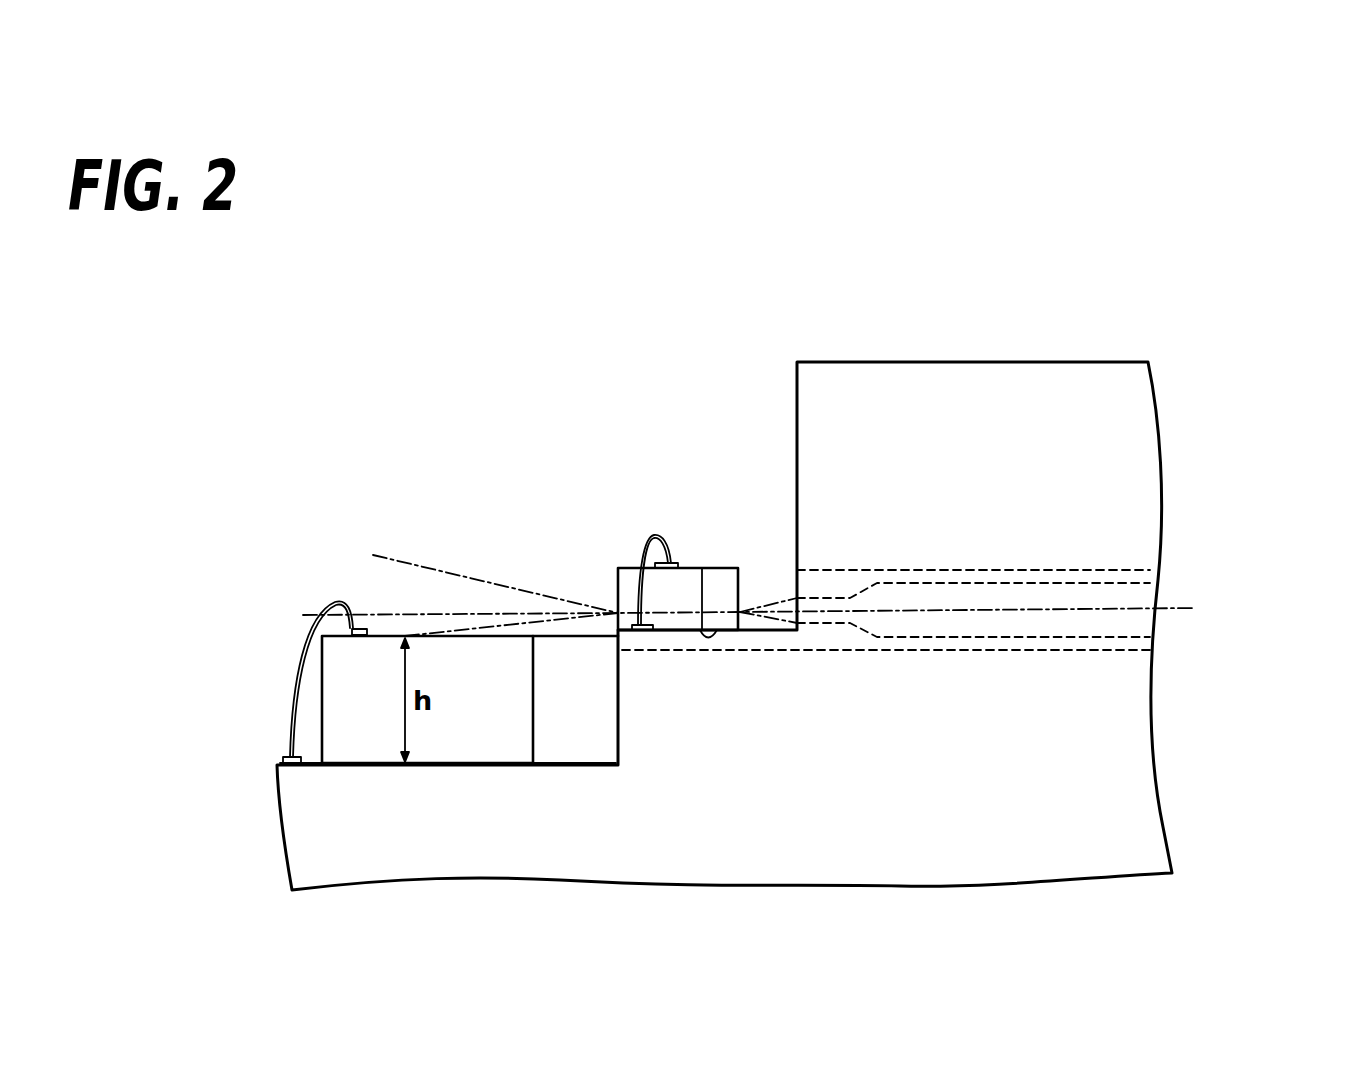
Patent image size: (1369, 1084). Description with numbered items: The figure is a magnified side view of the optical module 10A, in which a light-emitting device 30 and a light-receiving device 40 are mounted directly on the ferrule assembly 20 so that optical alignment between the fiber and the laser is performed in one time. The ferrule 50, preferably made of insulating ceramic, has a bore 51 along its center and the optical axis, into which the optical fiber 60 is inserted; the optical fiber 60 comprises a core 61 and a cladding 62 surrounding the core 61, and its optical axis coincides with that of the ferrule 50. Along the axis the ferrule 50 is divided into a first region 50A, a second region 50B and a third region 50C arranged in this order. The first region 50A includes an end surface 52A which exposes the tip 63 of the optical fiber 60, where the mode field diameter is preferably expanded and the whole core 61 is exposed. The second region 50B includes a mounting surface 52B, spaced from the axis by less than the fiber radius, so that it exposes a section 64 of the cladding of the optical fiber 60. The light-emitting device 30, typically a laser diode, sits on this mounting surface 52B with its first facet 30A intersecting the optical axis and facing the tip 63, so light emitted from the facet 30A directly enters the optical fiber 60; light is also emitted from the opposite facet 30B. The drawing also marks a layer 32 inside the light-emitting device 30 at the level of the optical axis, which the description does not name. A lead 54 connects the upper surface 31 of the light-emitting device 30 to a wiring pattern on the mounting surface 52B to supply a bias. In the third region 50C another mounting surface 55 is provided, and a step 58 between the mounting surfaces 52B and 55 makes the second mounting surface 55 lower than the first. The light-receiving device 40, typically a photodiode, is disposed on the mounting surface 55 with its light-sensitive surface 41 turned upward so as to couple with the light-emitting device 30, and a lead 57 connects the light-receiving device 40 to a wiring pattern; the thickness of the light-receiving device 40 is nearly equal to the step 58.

The optical module 10A is at (1100, 293).
The ferrule assembly 20 is at (1300, 358).
The light-emitting device 30 is at (728, 567).
The first facet 30A is at (742, 575).
The facet 30B is at (617, 590).
The upper surface 31 is at (690, 566).
The active layer 32 is at (702, 567).
The light-receiving device 40 is at (318, 727).
The light-sensitive surface 41 is at (380, 633).
The ferrule 50 is at (1135, 440).
The first region 50A is at (1163, 362).
The second region 50B is at (793, 362).
The third region 50C is at (617, 362).
The bore 51 is at (1107, 567).
The end surface 52A is at (797, 427).
The mounting surface 52B is at (753, 637).
The lead 54 is at (645, 553).
The mounting surface 55 is at (583, 760).
The lead 57 is at (295, 652).
The step 58 is at (615, 740).
The optical fiber 60 is at (1233, 570).
The core 61 is at (1145, 597).
The cladding 62 is at (1120, 643).
The tip 63 is at (797, 570).
The section 64 is at (785, 630).